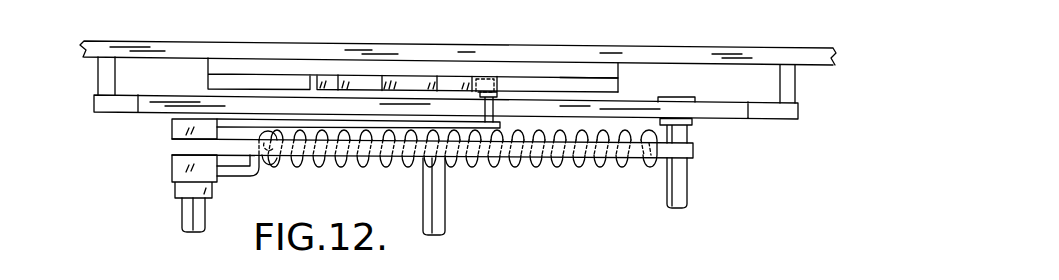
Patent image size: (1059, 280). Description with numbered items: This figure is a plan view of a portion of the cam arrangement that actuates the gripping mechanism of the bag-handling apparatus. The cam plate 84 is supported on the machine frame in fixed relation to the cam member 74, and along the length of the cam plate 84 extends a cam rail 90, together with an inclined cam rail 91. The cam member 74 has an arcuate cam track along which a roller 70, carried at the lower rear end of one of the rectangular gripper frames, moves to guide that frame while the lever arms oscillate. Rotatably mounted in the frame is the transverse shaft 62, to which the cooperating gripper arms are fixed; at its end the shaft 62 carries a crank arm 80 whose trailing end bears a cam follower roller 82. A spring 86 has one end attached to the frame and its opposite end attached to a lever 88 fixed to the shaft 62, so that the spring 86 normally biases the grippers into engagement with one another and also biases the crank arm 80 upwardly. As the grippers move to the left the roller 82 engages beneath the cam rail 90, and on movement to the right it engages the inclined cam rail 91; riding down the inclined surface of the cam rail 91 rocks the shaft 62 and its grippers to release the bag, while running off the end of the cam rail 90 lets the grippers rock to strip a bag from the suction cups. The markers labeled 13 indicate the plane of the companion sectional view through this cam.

The section line 13- 13 is at (78, 119).
The transverse shaft 62 is at (182, 217).
The roller 70 is at (687, 97).
The cam member 74 is at (737, 111).
The crank arm 80 is at (362, 126).
The cam follower roller 82 is at (490, 78).
The cam plate 84 is at (618, 70).
The spring 86 is at (528, 166).
The lever 88 is at (259, 176).
The cam rail 90 is at (208, 79).
The inclined cam rail 91 is at (418, 82).